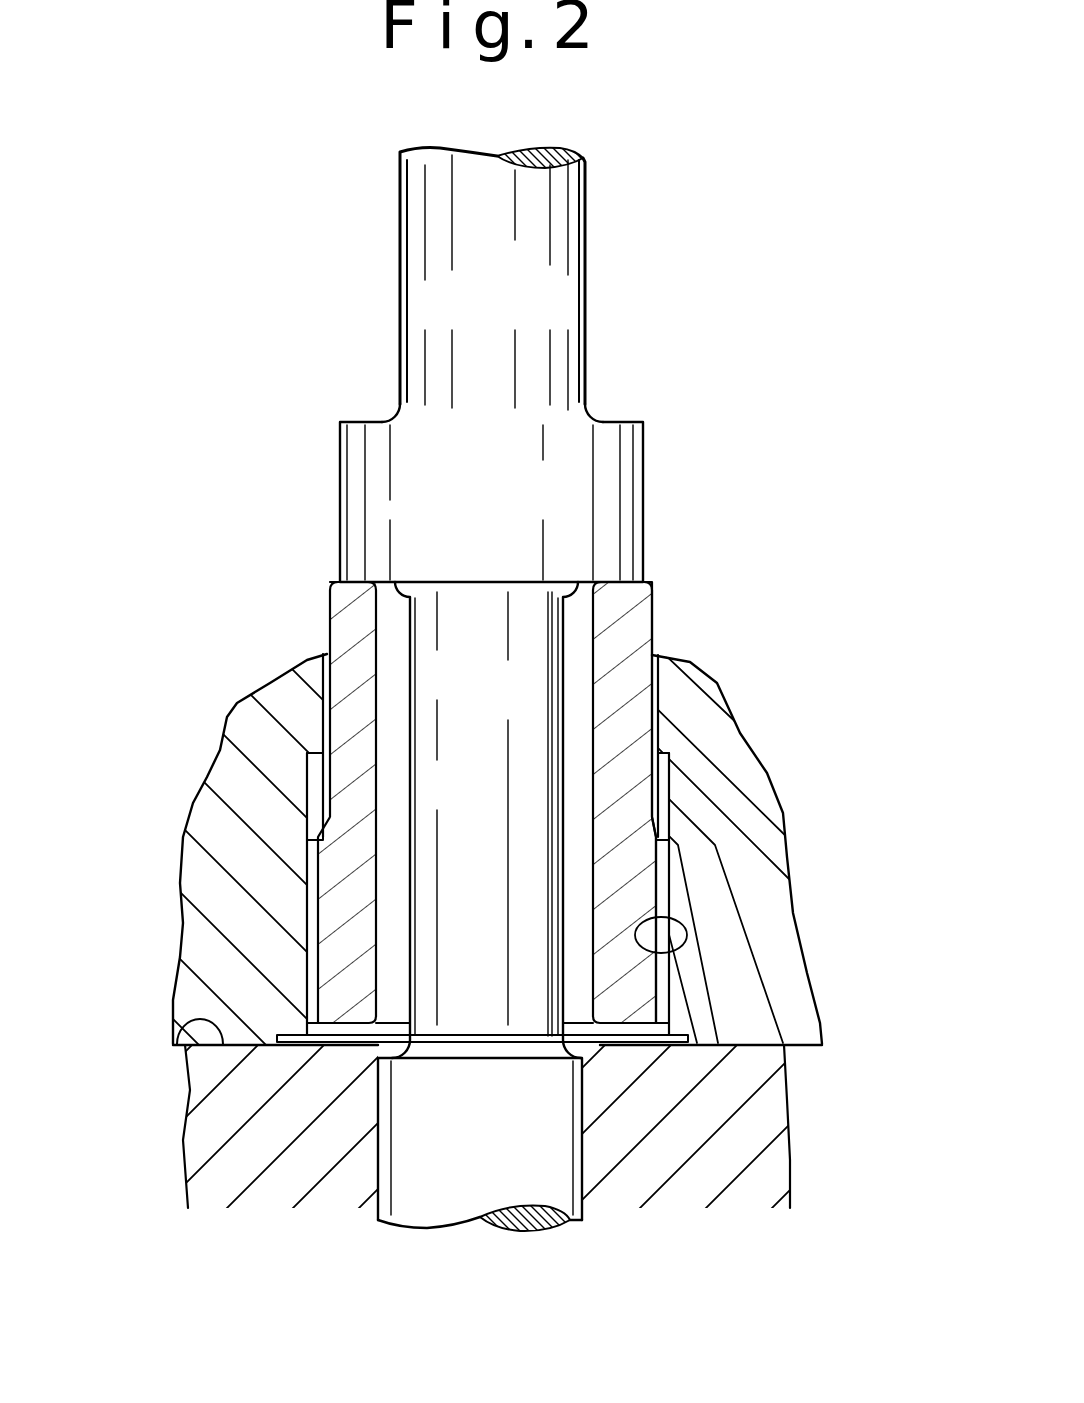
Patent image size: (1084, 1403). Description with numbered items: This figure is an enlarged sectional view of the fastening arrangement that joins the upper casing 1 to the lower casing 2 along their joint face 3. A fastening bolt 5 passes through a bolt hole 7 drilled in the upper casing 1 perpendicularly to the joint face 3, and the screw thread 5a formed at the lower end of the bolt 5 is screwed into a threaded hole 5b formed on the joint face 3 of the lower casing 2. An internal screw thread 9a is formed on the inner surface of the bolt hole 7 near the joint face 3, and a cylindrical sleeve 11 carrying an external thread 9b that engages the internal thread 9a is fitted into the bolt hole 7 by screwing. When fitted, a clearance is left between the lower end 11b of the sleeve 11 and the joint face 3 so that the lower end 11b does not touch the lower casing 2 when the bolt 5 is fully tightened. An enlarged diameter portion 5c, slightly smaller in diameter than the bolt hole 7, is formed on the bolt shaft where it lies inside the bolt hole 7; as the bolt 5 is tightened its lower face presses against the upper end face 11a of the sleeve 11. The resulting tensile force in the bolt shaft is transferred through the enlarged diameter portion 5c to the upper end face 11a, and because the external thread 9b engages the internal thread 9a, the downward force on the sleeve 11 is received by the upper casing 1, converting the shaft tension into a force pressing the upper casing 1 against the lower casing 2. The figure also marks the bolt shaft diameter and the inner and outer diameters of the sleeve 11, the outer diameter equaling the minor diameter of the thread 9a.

The upper casing 1 is at (242, 795).
The lower casing 2 is at (757, 1122).
The joint face 3 is at (180, 1023).
The fastening bolt 5 is at (562, 232).
The screw thread 5a is at (593, 1143).
The threaded hole 5b is at (567, 1157).
The enlarged diameter portion 5c is at (613, 497).
The bolt hole 7 is at (648, 660).
The internal screw thread 9a is at (670, 900).
The external thread 9b is at (687, 938).
The cylindrical sleeve 11 is at (350, 603).
The upper end face 11a is at (640, 566).
The lower end 11b is at (660, 1035).